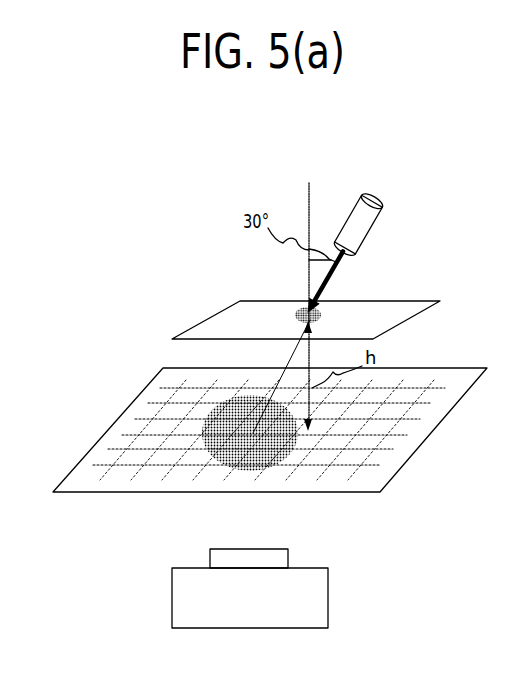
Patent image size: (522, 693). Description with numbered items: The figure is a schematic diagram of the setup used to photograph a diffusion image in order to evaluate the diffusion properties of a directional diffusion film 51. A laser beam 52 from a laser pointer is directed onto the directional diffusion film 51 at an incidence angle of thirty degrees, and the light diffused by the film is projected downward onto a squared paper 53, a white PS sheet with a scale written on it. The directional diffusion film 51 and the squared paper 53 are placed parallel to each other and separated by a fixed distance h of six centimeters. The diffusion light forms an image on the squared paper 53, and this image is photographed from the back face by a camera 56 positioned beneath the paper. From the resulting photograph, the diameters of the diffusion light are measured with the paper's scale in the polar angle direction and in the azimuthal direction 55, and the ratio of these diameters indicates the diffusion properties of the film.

The directional diffusion film 51 is at (233, 317).
The laser beam 52 is at (372, 196).
The squared paper 53 is at (447, 378).
The azimuthal direction 55 is at (362, 431).
The camera 56 is at (312, 595).